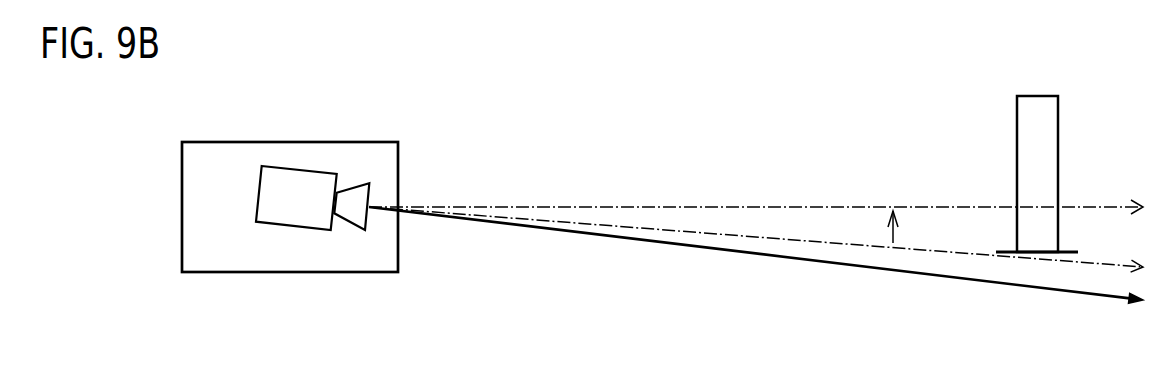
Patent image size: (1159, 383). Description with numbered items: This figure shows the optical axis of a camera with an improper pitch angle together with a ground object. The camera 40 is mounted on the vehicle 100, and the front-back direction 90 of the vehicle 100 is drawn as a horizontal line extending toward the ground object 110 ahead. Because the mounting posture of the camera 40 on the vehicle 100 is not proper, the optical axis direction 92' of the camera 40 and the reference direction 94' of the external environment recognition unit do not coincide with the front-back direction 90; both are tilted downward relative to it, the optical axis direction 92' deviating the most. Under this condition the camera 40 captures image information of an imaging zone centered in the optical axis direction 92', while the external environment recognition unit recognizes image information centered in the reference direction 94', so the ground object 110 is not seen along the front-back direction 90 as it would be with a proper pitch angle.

The vehicle 100 is at (182, 192).
The camera 40 is at (287, 178).
The front-back direction 90 is at (818, 206).
The reference direction 94' is at (756, 218).
The optical axis direction 92' is at (756, 270).
The ground object 110 is at (1058, 121).